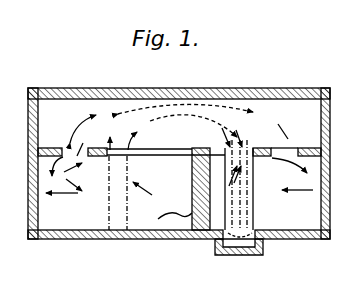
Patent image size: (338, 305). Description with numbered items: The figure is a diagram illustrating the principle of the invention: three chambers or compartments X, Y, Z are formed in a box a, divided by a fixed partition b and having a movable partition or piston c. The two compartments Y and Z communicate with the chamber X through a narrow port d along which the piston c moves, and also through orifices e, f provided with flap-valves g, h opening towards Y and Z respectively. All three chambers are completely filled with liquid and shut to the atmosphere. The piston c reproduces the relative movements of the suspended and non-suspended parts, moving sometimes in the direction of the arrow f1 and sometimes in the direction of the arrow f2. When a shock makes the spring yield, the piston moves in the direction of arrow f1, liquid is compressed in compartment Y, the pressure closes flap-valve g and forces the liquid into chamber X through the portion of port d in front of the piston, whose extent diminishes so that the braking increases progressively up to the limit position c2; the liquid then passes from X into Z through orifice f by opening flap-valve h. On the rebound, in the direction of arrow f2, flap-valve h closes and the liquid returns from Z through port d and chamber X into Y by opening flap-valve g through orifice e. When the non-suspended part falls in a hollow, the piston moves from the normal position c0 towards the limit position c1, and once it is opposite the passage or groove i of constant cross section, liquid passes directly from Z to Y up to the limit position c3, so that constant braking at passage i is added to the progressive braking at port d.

The box a is at (178, 88).
The fixed partition b is at (48, 148).
The orifice e is at (147, 135).
The orifice f is at (287, 148).
The flap-valve h is at (304, 133).
The chamber X is at (181, 127).
The compartment Y is at (103, 193).
The compartment Z is at (266, 217).
The port d is at (189, 189).
The flap-valve g is at (72, 174).
The arrow f1 is at (62, 208).
The arrow f2 is at (297, 204).
The movable partition or piston c is at (192, 202).
The normal position c0 is at (161, 216).
The limit position c1 is at (246, 208).
The limit position c2 is at (142, 204).
The limit position c3 is at (253, 172).
The passage i is at (239, 253).